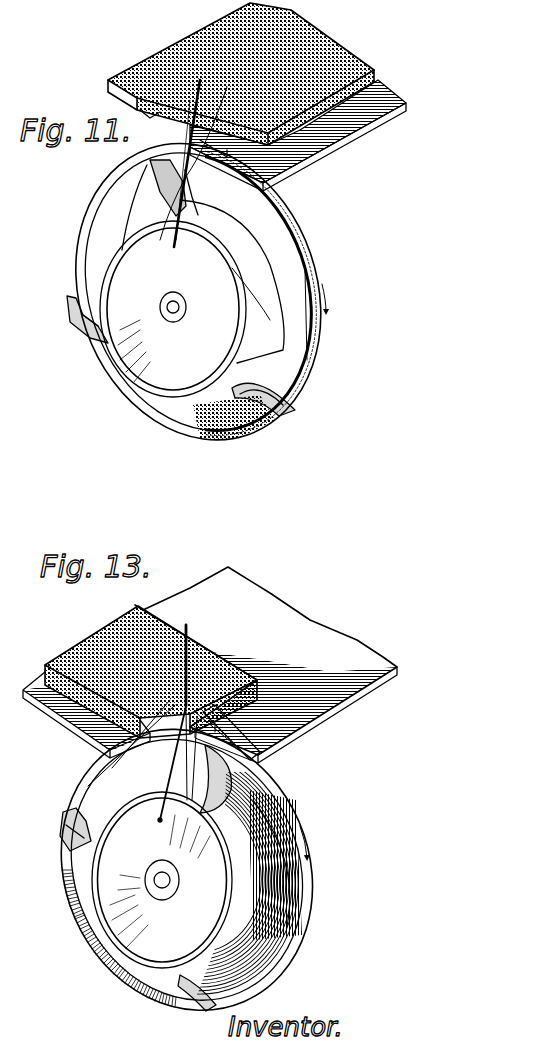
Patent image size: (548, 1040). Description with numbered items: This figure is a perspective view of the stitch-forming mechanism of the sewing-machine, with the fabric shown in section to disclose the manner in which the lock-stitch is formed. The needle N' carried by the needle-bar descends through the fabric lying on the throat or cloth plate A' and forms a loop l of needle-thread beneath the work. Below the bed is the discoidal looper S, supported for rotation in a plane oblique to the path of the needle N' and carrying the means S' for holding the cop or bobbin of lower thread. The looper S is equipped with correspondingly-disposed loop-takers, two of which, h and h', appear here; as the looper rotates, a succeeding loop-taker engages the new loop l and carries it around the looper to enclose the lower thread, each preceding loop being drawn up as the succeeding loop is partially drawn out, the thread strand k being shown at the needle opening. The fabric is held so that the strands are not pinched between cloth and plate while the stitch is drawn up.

In FIG. 11, the needle N' is at (182, 163).
In FIG. 13, the needle N' is at (187, 718).
In FIG. 11, the loop-taker h is at (160, 205).
In FIG. 11, the loop-taker h' is at (78, 319).
In FIG. 13, the loop-taker h' is at (75, 818).
In FIG. 11, the looper S is at (198, 292).
In FIG. 13, the looper S is at (187, 865).
In FIG. 13, the means for carrying a cop or bobbin S' is at (162, 880).
In FIG. 11, the throat plate A' is at (273, 135).
In FIG. 13, the throat plate A' is at (210, 665).
In FIG. 13, the loop l is at (76, 806).
In FIG. 13, the thread guide k is at (227, 739).